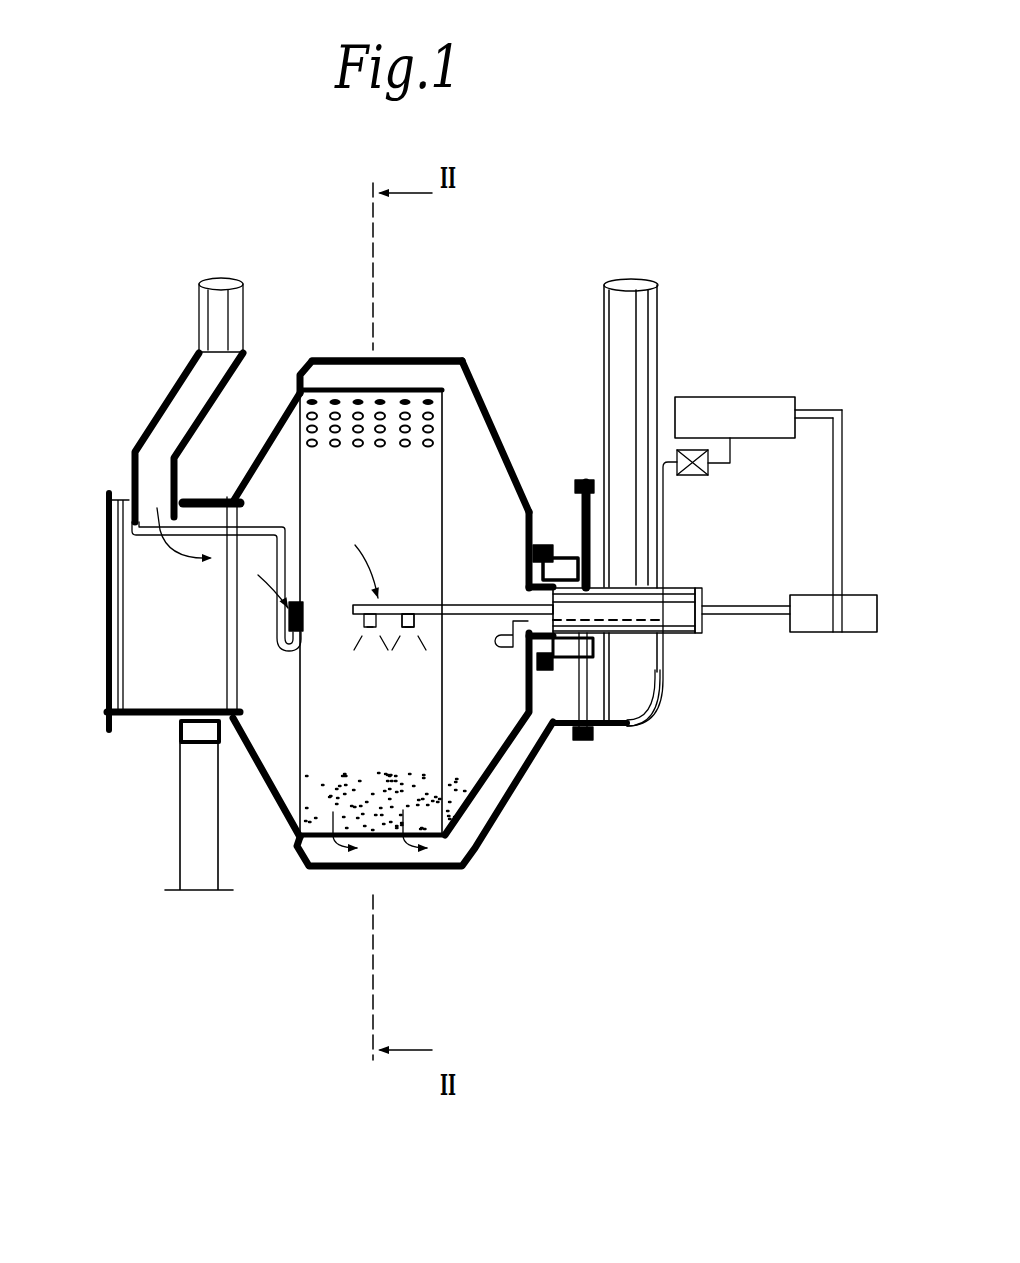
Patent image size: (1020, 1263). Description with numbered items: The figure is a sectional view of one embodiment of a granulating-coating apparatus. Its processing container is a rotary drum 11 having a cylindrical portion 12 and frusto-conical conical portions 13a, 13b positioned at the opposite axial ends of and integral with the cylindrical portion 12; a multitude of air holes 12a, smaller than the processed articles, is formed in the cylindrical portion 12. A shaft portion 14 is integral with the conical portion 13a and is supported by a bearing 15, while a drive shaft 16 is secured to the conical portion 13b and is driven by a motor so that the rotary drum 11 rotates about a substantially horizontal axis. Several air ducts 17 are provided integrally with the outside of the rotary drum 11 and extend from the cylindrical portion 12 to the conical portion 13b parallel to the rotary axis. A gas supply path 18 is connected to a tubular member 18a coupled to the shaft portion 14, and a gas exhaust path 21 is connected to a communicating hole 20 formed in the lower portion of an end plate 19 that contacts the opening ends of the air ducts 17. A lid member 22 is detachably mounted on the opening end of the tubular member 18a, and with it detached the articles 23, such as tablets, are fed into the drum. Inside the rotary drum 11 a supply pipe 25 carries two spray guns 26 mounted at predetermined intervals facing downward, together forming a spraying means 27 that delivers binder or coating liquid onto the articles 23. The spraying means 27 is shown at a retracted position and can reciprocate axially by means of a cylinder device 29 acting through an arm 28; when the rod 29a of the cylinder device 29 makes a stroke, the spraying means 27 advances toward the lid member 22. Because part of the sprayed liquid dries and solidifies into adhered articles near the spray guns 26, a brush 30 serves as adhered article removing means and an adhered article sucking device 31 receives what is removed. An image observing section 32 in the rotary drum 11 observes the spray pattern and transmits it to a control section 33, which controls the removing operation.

The rotary drum 11 is at (482, 418).
The cylindrical portion 12 is at (418, 390).
The air holes 12a is at (383, 402).
The conical portion 13a is at (272, 413).
The conical portion 13b is at (507, 462).
The shaft portion 14 is at (203, 497).
The bearing 15 is at (177, 750).
The drive shaft 16 is at (695, 642).
The air ducts 17 is at (437, 870).
The gas supply path 18 is at (180, 403).
The tubular member 18a is at (132, 713).
The end plate 19 is at (597, 500).
The communicating hole 20 is at (587, 687).
The gas exhaust path 21 is at (648, 386).
The lid member 22 is at (110, 635).
The articles 23 is at (290, 800).
The supply pipe 25 is at (480, 603).
The spray guns 26 is at (368, 632).
The spraying means 27 is at (405, 605).
The arm 28 is at (840, 512).
The cylinder device 29 is at (762, 407).
The rod 29a is at (822, 413).
The brush 30 is at (290, 572).
The adhered article sucking device 31 is at (250, 560).
The image observing section 32 is at (503, 652).
The control section 33 is at (698, 477).